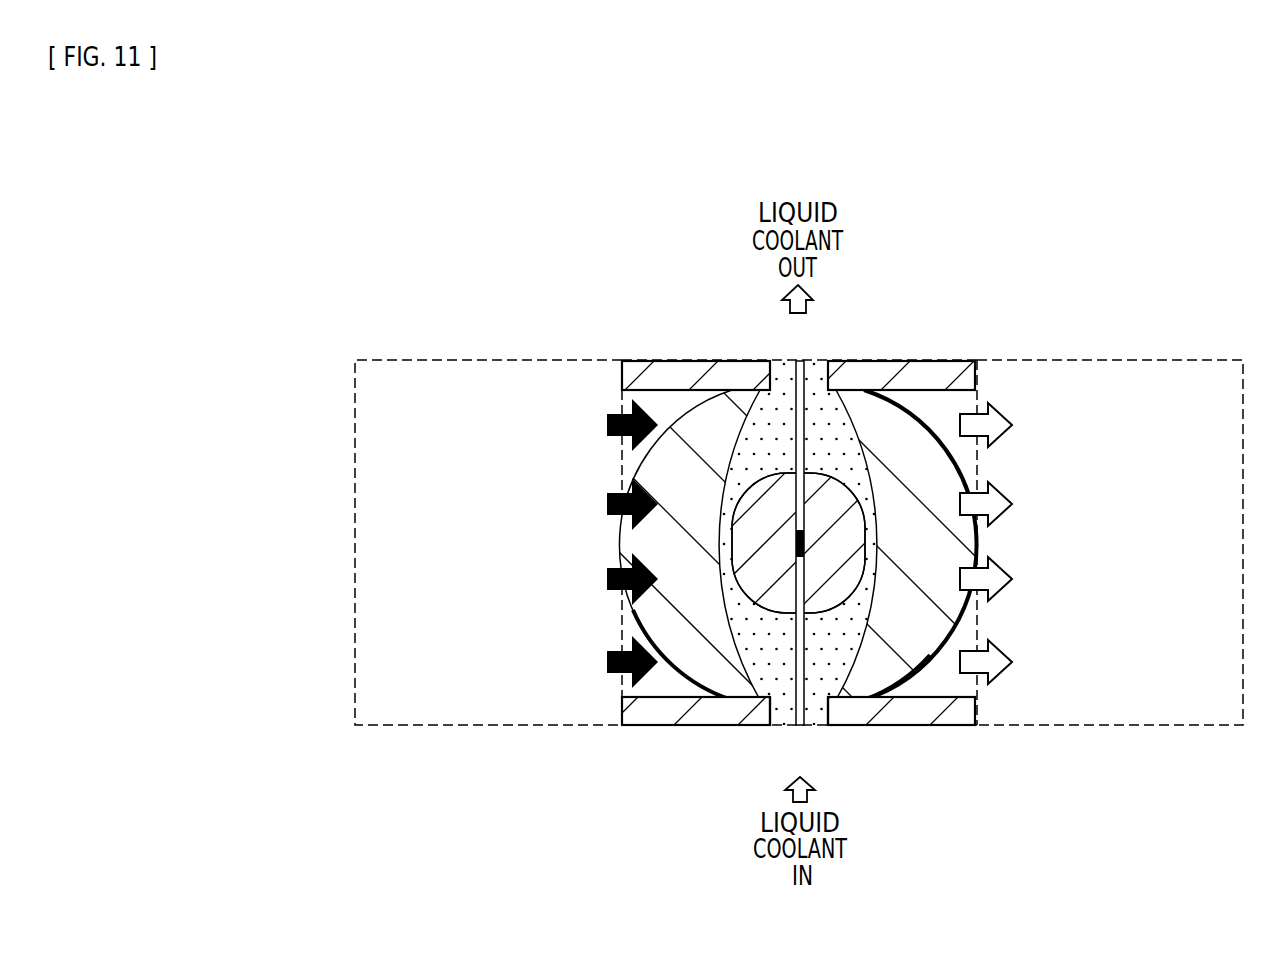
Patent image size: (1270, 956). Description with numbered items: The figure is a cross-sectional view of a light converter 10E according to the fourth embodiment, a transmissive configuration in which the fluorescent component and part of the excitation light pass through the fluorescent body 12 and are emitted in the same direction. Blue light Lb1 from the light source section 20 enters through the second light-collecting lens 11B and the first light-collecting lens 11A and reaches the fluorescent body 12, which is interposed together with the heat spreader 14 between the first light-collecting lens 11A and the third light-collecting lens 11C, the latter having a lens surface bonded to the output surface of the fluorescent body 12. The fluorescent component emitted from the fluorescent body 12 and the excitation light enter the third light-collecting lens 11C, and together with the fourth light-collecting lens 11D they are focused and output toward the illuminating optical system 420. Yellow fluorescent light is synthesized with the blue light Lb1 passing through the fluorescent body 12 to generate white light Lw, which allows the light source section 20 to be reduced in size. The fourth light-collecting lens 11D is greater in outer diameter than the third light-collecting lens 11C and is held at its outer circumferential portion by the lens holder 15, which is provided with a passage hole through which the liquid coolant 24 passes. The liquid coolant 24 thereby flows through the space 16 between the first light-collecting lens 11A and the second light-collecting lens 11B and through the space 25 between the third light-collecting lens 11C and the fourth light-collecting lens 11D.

The light converter 10E is at (716, 286).
The first light-collecting lens 11A is at (777, 483).
The second light-collecting lens 11B is at (683, 632).
The third light-collecting lens 11C is at (818, 483).
The fourth light-collecting lens 11D is at (962, 688).
The fluorescent body 12 is at (790, 600).
The heat spreader 14 is at (803, 363).
The lens holder 15 is at (657, 718).
The space 16 is at (785, 667).
The light source section 20 is at (457, 728).
The liquid coolant 24 is at (783, 717).
The space 25 is at (910, 635).
The illuminating optical system 420 is at (1233, 728).
The blue light Lb1 is at (606, 663).
The white light Lw is at (995, 592).